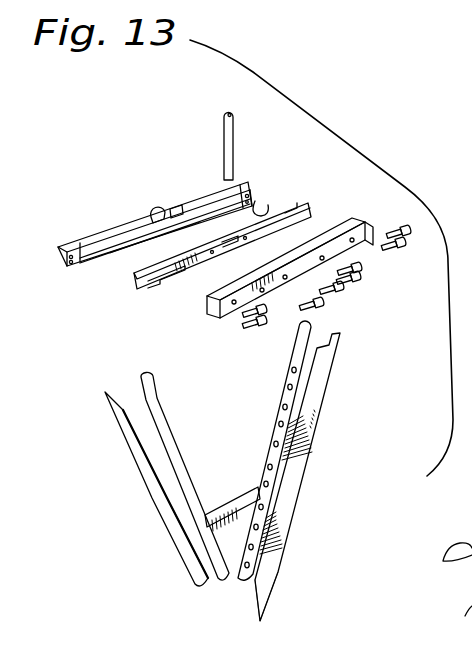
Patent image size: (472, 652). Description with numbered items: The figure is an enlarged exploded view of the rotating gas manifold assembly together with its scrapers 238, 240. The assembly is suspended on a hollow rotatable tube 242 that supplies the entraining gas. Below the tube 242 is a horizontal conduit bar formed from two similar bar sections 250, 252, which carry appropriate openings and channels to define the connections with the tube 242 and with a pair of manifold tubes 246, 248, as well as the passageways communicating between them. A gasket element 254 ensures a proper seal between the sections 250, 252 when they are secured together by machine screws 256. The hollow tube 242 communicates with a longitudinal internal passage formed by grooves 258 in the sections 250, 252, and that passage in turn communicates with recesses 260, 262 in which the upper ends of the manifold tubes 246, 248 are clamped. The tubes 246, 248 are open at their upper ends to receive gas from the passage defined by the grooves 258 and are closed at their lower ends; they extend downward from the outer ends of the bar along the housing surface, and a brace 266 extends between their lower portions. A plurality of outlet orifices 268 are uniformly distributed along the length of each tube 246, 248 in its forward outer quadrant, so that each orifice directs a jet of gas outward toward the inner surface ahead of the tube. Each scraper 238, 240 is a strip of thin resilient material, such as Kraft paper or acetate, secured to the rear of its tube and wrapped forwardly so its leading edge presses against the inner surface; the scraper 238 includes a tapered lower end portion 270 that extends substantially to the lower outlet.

The scraper 238 is at (333, 370).
The scraper 240 is at (137, 460).
The hollow rotatable tube 242 is at (222, 122).
The manifold tube 246 is at (155, 208).
The manifold tube 248 is at (140, 380).
The bar section 250 is at (65, 267).
The bar section 252 is at (206, 305).
The gasket element 254 is at (293, 204).
The machine screws 256 is at (408, 240).
The grooves 258 is at (183, 206).
The recess 260 is at (266, 203).
The recess 262 is at (80, 256).
The brace 266 is at (218, 510).
The outlet orifices 268 is at (283, 408).
The lower end portion 270 is at (263, 588).